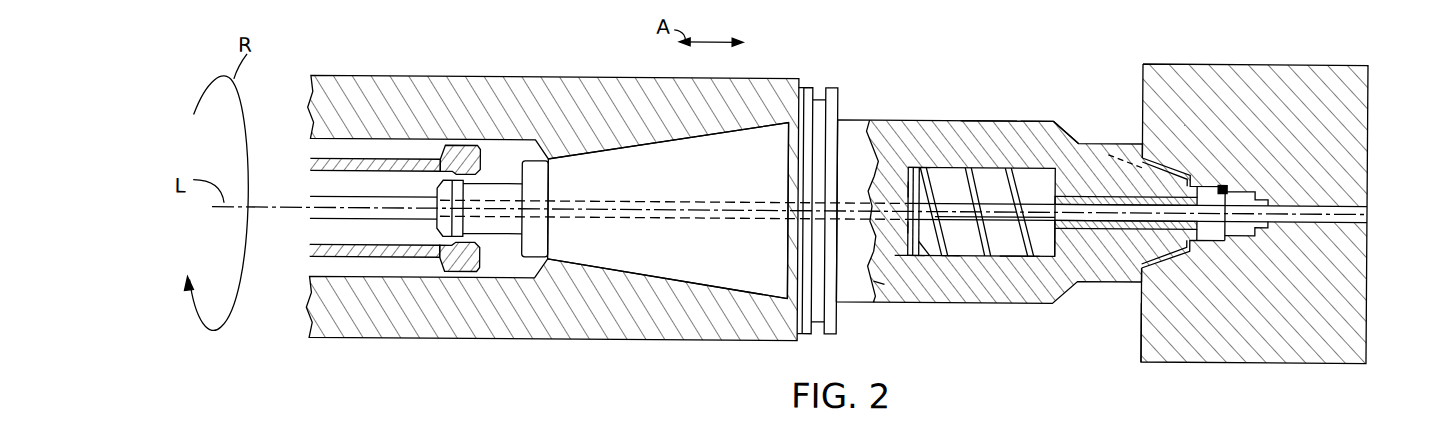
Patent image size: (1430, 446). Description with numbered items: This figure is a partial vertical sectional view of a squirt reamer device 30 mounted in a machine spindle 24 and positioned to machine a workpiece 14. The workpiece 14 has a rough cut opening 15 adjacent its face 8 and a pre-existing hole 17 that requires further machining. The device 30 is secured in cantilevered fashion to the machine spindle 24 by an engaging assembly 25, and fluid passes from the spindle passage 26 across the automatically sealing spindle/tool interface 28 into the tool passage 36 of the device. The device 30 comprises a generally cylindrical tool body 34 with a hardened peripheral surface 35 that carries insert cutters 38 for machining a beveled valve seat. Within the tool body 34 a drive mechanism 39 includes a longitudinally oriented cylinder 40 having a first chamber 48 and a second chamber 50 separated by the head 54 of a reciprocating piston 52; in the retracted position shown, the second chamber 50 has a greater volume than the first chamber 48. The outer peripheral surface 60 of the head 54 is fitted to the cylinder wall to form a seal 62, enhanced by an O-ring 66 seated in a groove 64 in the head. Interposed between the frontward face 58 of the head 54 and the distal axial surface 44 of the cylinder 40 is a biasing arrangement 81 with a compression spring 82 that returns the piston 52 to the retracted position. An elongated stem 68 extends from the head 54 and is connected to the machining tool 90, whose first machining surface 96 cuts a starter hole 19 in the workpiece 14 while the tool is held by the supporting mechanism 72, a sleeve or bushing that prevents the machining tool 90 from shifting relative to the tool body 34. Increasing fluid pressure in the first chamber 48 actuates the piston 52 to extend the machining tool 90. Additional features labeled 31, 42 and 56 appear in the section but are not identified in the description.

The face 8 is at (1140, 340).
The workpiece 14 is at (1319, 80).
The rough cut opening 15 is at (1227, 182).
The pre-existing hole 17 is at (1368, 210).
The starter hole 19 is at (1258, 198).
The machine spindle 24 is at (497, 78).
The engaging assembly 25 is at (463, 150).
The spindle passage 26 is at (360, 221).
The spindle/tool interface 28 is at (427, 162).
The squirt reamer device 30 is at (1005, 100).
The tapered shank 31 is at (708, 187).
The tool body 34 is at (1103, 280).
The peripheral surface 35 is at (1042, 119).
The tool passage 36 is at (726, 219).
The insert cutters 38 is at (1132, 142).
The drive mechanism 39 is at (1022, 147).
The cylinder 40 is at (1018, 260).
The upper wall 42 is at (908, 166).
The distal axial surface 44 is at (1050, 260).
The first chamber 48 is at (885, 283).
The second chamber 50 is at (991, 249).
The piston 52 is at (946, 256).
The head 54 is at (906, 225).
The inlet 56 is at (897, 254).
The frontward face 58 is at (922, 166).
The outer peripheral surface 60 is at (913, 166).
The seal 62 is at (920, 256).
The groove 64 is at (908, 188).
The O-ring 66 is at (916, 258).
The stem 68 is at (1000, 210).
The supporting mechanism 72 is at (1225, 184).
The biasing arrangement 81 is at (991, 150).
The compression spring 82 is at (952, 256).
The machining tool 90 is at (1185, 168).
The first machining surface 96 is at (1260, 234).